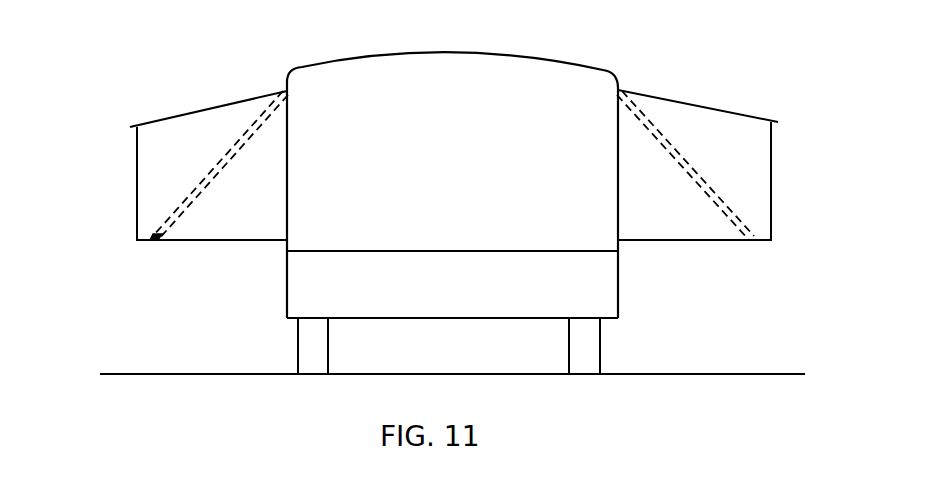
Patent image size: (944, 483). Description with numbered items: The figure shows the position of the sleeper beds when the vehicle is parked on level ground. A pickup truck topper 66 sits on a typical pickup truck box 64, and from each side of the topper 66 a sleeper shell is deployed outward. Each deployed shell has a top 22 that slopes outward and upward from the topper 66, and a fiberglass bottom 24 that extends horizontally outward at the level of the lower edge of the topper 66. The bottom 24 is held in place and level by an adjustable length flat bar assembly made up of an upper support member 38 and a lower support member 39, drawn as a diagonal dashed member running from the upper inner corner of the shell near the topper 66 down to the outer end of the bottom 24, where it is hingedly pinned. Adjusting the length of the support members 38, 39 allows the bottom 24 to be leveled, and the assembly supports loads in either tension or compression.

The top 22 is at (222, 105).
The bottom 24 is at (213, 243).
The upper support member 38 is at (443, 164).
The lower support member 39 is at (200, 175).
The typical pickup truck box 64 is at (620, 287).
The pickup truck topper 66 is at (540, 55).